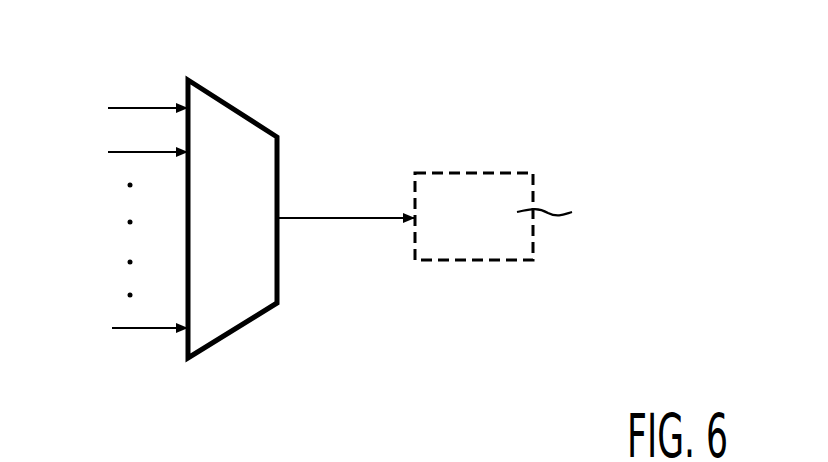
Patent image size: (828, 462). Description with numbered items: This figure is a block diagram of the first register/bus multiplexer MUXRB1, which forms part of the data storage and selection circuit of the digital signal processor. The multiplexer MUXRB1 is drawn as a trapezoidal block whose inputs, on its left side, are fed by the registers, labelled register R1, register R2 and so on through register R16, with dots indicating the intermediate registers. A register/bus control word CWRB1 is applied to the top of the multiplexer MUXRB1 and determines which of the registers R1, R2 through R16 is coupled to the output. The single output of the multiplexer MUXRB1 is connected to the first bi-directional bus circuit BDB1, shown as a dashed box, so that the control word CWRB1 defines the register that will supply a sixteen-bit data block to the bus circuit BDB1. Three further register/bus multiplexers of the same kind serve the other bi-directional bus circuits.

The register/bus multiplexer MUXRB1 is at (242, 133).
The register/bus control word CWRB1 is at (218, 99).
The register R1 is at (127, 105).
The register R2 is at (127, 151).
The register R16 is at (126, 327).
The first bi-directional bus circuit BDB1 is at (462, 193).